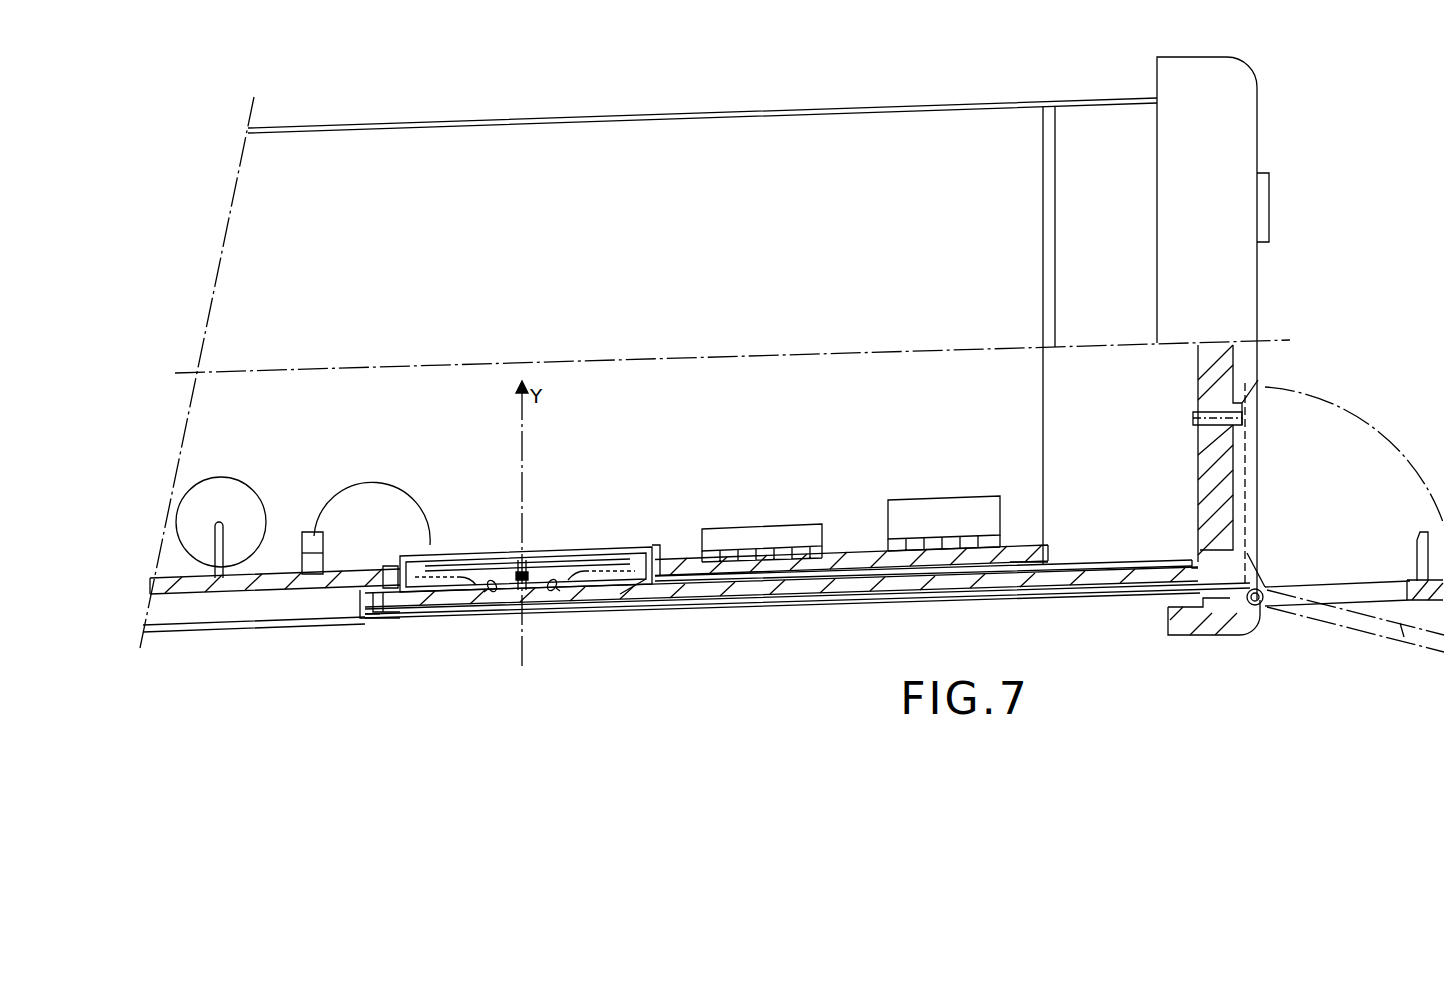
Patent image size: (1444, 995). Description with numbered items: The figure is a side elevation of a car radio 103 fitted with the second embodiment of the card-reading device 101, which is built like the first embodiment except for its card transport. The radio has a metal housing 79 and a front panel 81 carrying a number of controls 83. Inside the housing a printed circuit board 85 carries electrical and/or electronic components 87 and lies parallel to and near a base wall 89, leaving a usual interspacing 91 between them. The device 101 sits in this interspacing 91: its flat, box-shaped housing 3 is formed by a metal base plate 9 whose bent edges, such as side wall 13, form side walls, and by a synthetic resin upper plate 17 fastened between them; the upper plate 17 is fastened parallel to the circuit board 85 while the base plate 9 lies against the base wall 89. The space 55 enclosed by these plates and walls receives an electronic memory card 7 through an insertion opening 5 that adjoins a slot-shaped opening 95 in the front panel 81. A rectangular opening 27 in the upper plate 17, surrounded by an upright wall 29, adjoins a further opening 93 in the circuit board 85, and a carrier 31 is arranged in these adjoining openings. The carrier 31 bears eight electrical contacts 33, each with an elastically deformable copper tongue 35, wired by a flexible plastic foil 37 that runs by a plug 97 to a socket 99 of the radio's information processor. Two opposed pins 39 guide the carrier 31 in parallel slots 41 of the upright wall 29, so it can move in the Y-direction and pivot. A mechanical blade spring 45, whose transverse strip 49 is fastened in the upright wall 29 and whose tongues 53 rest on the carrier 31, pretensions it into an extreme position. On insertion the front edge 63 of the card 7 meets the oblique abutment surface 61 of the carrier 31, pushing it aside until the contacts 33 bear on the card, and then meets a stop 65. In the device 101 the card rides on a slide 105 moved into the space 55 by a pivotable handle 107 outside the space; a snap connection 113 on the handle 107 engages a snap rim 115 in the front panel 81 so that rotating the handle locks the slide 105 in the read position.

The housing 3 is at (1063, 555).
The insertion opening 5 is at (1185, 562).
The electronic memory card 7 is at (918, 588).
The base plate 9 is at (758, 607).
The side wall 13 is at (357, 612).
The upper plate 17 is at (877, 578).
The rectangular opening 27 is at (618, 553).
The upright wall 29 is at (648, 548).
The carrier 31 is at (483, 578).
The electrical contacts 33 is at (556, 586).
The copper tongue 35 is at (522, 590).
The flexible plastic foil 37 is at (378, 470).
The pins 39 is at (548, 553).
The slots 41 is at (520, 590).
The mechanical blade spring 45 is at (496, 548).
The transverse strip 49 is at (524, 555).
The tongues 53 is at (573, 555).
The space 55 is at (1020, 573).
The abutment surface 61 is at (628, 597).
The front edge 63 is at (383, 615).
The stop 65 is at (362, 623).
The metal housing 79 is at (623, 117).
The front panel 81 is at (1238, 277).
The controls 83 is at (1271, 222).
The printed circuit board 85 is at (284, 585).
The electrical and/or electronic components 87 is at (215, 492).
The base wall 89 is at (838, 612).
The interspacing 91 is at (190, 612).
The further opening 93 is at (390, 566).
The slot-shaped opening 95 is at (1225, 568).
The plug 97 is at (320, 541).
The socket 99 is at (316, 565).
The device 101 is at (443, 648).
The car radio 103 is at (1086, 90).
The slide 105 is at (1010, 600).
The pivotable handle 107 is at (1354, 588).
The snap connection 113 is at (1418, 532).
The snap rim 115 is at (1212, 428).